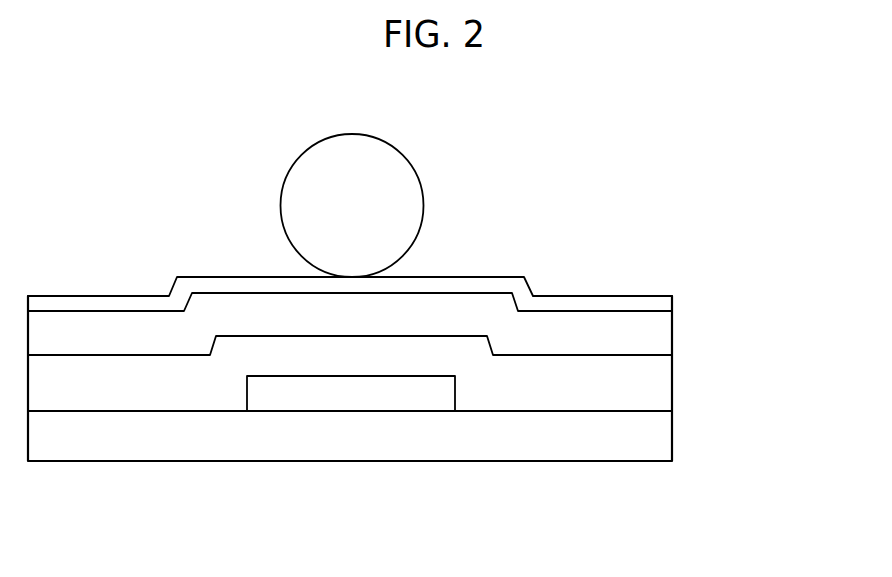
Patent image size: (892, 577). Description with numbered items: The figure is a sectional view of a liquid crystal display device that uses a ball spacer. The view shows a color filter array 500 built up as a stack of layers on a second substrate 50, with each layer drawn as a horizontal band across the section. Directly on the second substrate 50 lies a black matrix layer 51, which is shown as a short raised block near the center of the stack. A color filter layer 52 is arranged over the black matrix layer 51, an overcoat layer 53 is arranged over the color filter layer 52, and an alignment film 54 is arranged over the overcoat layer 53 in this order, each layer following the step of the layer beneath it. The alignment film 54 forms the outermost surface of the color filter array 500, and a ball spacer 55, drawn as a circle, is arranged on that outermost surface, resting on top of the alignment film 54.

The second substrate 50 is at (660, 434).
The black matrix layer 51 is at (360, 398).
The color filter layer 52 is at (660, 381).
The overcoat layer 53 is at (660, 339).
The alignment film 54 is at (405, 299).
The ball spacer 55 is at (408, 207).
The color filter array 500 is at (443, 414).